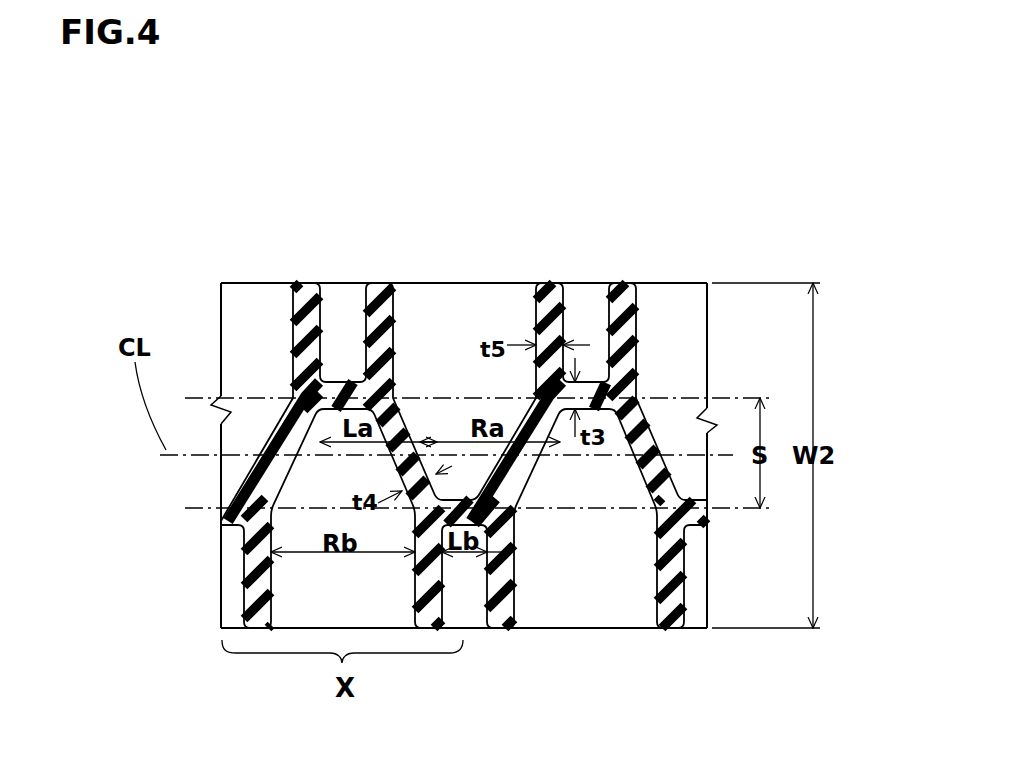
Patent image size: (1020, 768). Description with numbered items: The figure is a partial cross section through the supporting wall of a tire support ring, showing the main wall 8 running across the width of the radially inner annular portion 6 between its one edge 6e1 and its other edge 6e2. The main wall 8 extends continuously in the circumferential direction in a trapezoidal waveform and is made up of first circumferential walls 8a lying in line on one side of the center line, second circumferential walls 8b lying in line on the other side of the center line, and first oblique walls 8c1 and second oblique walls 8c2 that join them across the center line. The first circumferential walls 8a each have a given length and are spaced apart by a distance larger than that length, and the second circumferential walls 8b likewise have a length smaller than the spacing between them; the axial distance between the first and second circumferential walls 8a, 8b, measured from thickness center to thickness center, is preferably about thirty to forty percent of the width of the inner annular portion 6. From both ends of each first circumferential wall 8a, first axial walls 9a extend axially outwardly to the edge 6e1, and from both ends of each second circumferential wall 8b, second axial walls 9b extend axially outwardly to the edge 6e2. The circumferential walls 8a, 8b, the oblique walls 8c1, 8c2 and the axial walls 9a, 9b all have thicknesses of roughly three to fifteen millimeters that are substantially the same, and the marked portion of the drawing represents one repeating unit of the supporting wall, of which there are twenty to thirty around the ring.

The radially inner annular portion 6 is at (693, 337).
The one edge of the inner annular portion 6e1 is at (240, 283).
The other edge of the inner annular portion 6e2 is at (277, 630).
The main wall 8 is at (283, 490).
The first circumferential walls 8a is at (338, 386).
The second circumferential walls 8b is at (223, 513).
The first oblique walls 8c1 is at (414, 440).
The second oblique walls 8c2 is at (263, 463).
The first axial walls 9a is at (293, 316).
The second axial walls 9b is at (250, 562).